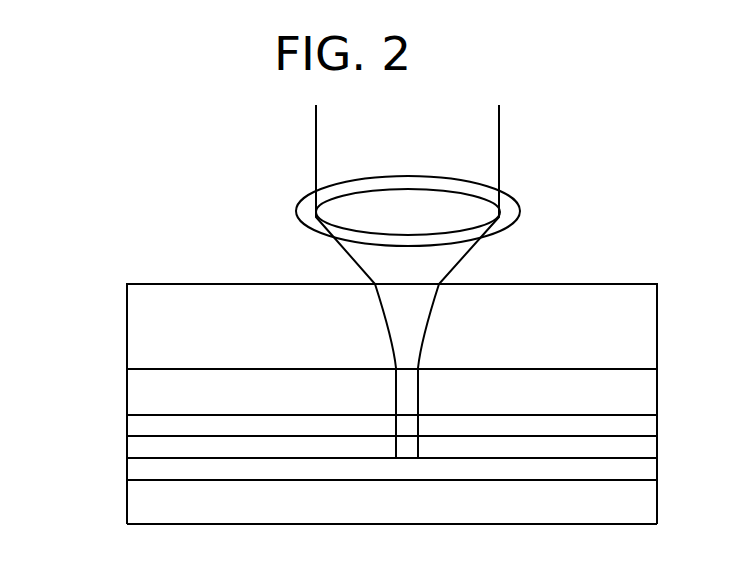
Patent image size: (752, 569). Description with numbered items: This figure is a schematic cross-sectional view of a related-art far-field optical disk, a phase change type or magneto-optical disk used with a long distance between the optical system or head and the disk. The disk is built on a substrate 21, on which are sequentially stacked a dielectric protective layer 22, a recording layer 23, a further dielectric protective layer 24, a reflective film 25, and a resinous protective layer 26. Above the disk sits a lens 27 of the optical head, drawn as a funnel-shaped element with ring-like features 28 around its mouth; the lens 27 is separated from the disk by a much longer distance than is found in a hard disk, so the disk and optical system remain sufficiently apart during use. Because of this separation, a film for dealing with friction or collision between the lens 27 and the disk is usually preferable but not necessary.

The substrate 21 is at (137, 328).
The dielectric protective layer 22 is at (137, 389).
The recording layer 23 is at (137, 426).
The dielectric protective layer 24 is at (137, 451).
The reflective film 25 is at (137, 473).
The resinous protective layer 26 is at (137, 511).
The lens 27 is at (503, 220).
The ring electrode 28 is at (313, 215).